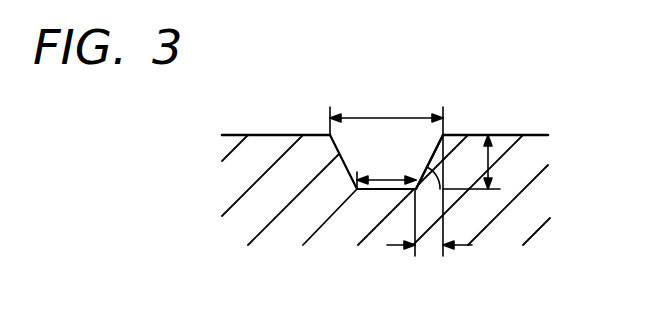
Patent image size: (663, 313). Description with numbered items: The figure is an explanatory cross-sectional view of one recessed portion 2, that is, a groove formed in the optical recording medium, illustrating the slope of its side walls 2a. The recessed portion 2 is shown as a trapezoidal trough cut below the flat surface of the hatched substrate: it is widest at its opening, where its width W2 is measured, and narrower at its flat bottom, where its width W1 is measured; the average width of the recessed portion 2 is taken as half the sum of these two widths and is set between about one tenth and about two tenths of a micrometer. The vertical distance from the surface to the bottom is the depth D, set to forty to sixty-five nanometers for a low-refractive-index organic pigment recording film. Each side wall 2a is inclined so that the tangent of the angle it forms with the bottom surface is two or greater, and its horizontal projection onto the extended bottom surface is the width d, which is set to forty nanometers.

The recessed portion 2 is at (416, 187).
The side wall 2a is at (430, 160).
The width at the opening W2 is at (375, 118).
The width at the bottom W1 is at (381, 180).
The depth D is at (481, 162).
The projection width of the side wall d is at (429, 195).